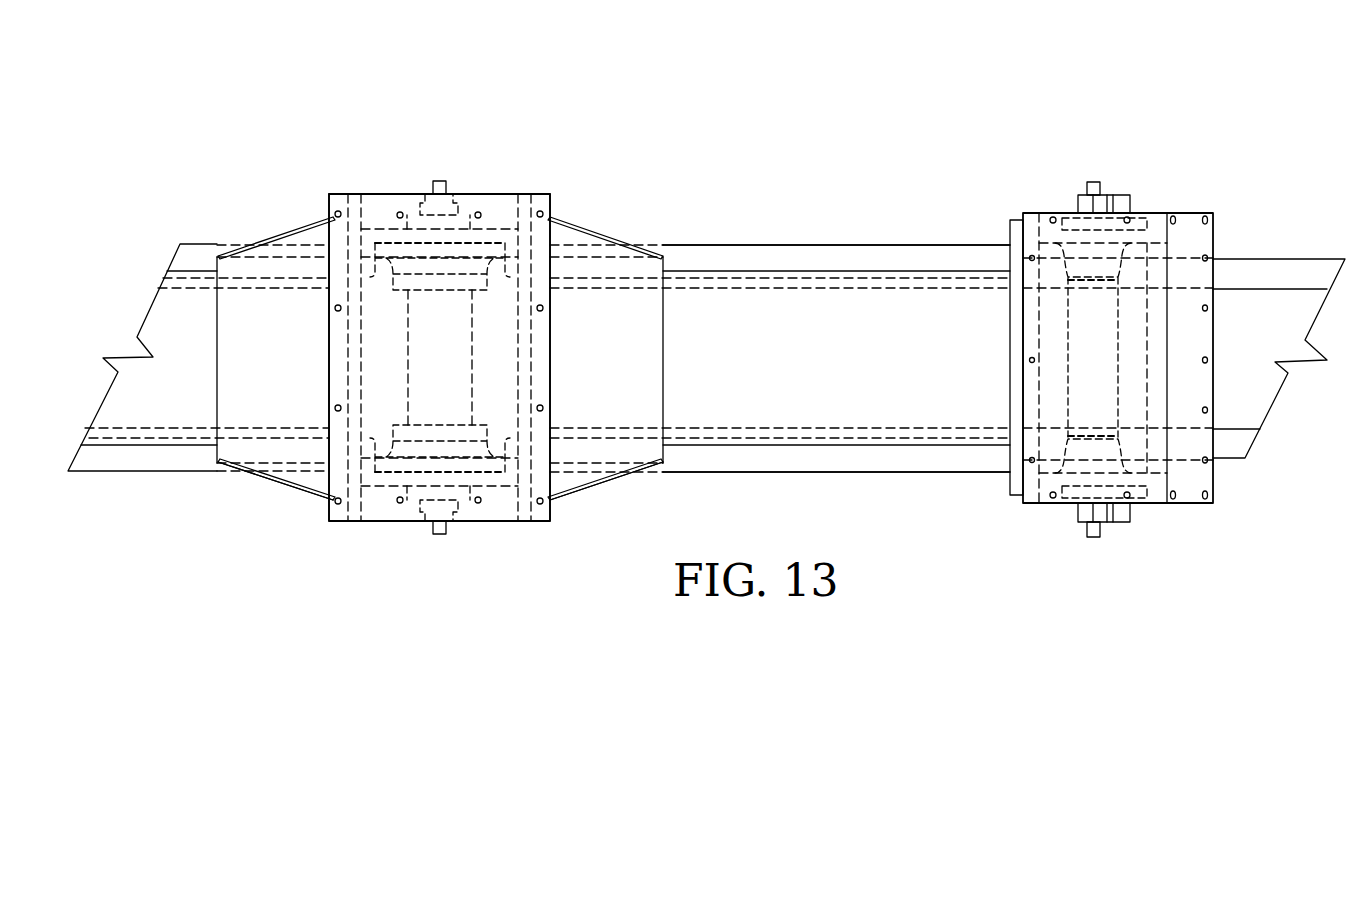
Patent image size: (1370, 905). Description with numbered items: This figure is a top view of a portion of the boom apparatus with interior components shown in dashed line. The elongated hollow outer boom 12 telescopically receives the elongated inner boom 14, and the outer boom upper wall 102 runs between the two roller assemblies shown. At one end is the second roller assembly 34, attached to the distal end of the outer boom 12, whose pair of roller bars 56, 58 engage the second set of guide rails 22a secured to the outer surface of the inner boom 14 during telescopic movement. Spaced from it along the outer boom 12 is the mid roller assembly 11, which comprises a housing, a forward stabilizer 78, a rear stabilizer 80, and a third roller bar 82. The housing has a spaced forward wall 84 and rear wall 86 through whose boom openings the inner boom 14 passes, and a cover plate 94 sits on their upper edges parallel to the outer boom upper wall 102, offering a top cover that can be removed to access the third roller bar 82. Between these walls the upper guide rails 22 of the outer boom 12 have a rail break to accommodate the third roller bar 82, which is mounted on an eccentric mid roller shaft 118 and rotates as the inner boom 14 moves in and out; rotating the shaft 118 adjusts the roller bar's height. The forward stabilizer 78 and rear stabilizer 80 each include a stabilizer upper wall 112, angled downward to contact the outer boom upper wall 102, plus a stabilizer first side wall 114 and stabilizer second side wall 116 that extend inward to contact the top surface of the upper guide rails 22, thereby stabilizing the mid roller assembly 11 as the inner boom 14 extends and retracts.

The mid roller assembly 11 is at (408, 152).
The outer boom 12 is at (137, 292).
The inner boom 14 is at (1280, 407).
The guide rails 22 is at (200, 253).
The guide rails 22a is at (1270, 268).
The second roller assembly 34 is at (1168, 150).
The roller bar 56 is at (1108, 370).
The roller bar 58 is at (1140, 408).
The forward stabilizer 78 is at (627, 217).
The rear stabilizer 80 is at (250, 217).
The third roller bar 82 is at (447, 388).
The forward wall 84 is at (520, 372).
The rear wall 86 is at (357, 372).
The cover plate 94 is at (383, 212).
The outer boom upper wall 102 is at (876, 369).
The stabilizer upper wall 112 is at (255, 330).
The stabilizer first side wall 114 is at (295, 488).
The stabilizer second side wall 116 is at (297, 228).
The eccentric mid roller shaft 118 is at (447, 177).